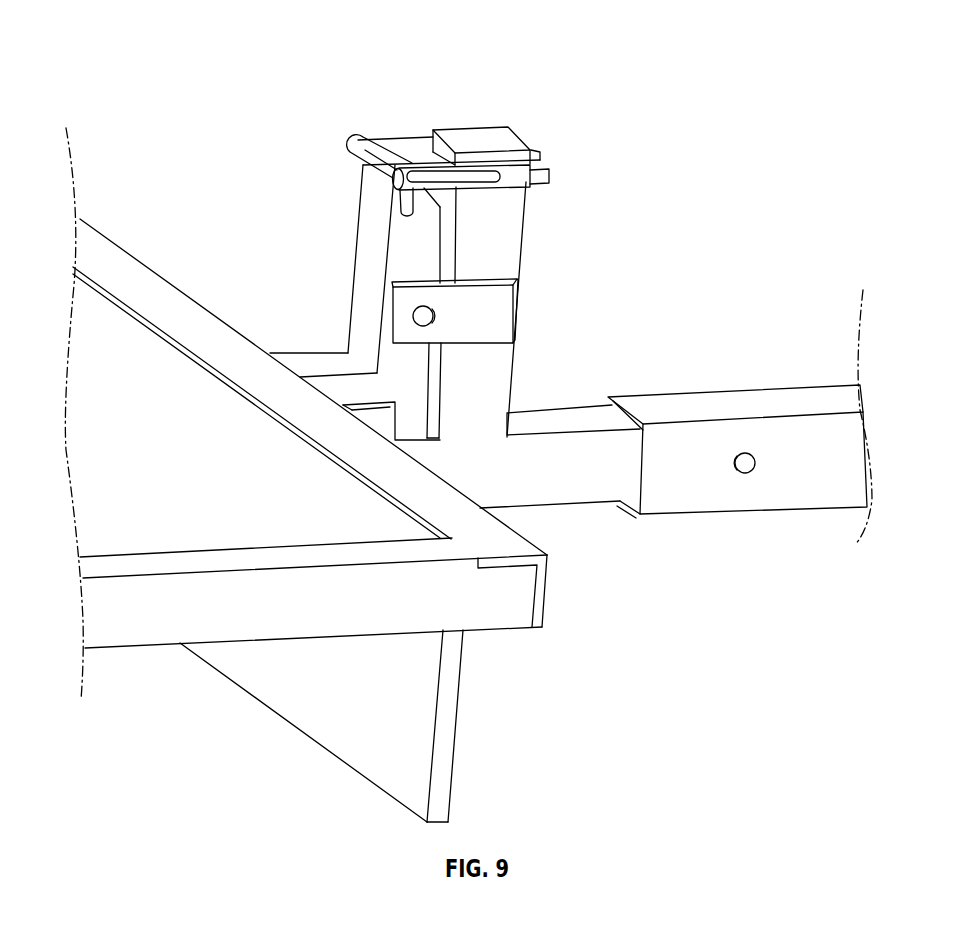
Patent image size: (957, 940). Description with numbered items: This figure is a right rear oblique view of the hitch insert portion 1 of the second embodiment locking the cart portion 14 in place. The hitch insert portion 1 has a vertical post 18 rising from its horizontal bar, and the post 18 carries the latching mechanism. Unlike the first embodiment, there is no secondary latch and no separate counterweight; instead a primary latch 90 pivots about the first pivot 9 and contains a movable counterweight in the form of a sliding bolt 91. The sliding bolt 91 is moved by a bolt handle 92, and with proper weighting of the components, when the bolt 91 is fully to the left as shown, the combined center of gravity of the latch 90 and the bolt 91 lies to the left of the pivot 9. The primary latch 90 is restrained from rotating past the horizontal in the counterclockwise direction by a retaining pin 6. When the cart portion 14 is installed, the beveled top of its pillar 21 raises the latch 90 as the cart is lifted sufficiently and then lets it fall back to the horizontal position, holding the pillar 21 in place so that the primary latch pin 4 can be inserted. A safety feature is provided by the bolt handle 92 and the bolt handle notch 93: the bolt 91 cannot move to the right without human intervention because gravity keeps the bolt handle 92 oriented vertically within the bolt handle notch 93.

The hitch insert portion 1 is at (615, 181).
The primary latch pin 4 is at (430, 316).
The retaining pin 6 is at (420, 189).
The first pivot 9 is at (497, 152).
The cart portion 14 is at (280, 278).
The vertical post 18 is at (493, 227).
The pillar 21 is at (375, 224).
The primary latch 90 is at (355, 146).
The sliding bolt 91 is at (479, 178).
The bolt handle 92 is at (398, 200).
The bolt handle notch 93 is at (490, 190).